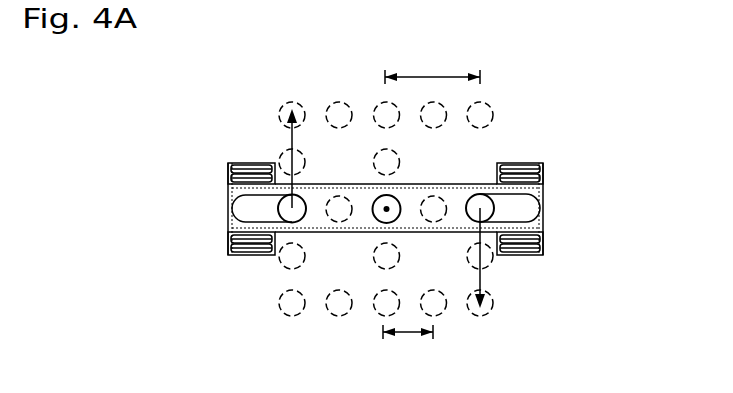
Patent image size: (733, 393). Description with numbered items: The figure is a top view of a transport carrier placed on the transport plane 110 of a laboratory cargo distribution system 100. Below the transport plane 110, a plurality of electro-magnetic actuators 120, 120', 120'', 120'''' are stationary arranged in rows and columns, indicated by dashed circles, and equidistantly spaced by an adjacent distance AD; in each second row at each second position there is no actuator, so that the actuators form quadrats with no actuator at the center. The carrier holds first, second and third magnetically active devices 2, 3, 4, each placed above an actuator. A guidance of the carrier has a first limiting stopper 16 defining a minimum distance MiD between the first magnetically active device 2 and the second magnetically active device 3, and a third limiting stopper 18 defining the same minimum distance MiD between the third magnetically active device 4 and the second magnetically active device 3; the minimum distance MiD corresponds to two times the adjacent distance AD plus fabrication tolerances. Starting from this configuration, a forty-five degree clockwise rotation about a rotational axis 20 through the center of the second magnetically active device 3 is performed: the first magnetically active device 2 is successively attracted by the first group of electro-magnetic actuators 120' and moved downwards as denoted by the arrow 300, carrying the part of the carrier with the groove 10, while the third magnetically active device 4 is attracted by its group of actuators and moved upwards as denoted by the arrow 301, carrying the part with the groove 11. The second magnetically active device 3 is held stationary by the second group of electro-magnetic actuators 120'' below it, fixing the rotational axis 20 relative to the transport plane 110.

The laboratory cargo distribution system 100 is at (457, 145).
The transport plane 110 is at (338, 349).
The electro-magnetic actuator 120 is at (528, 114).
The first group of electro-magnetic actuators 120' is at (530, 279).
The second group of electro-magnetic actuators 120'' is at (381, 237).
The fastening positions (holes) 120'''' is at (234, 137).
The first magnetically active device 2 is at (500, 186).
The second magnetically active device 3 is at (399, 219).
The third magnetically active device 4 is at (278, 208).
The groove 10 is at (530, 212).
The groove 11 is at (245, 214).
The first limiting stopper 16 is at (466, 206).
The third limiting stopper 18 is at (298, 223).
The rotational axis 20 is at (387, 209).
The arrow 300 is at (471, 288).
The arrow 301 is at (296, 132).
The minimum distance MiD is at (432, 76).
The adjacent distance AD is at (404, 334).